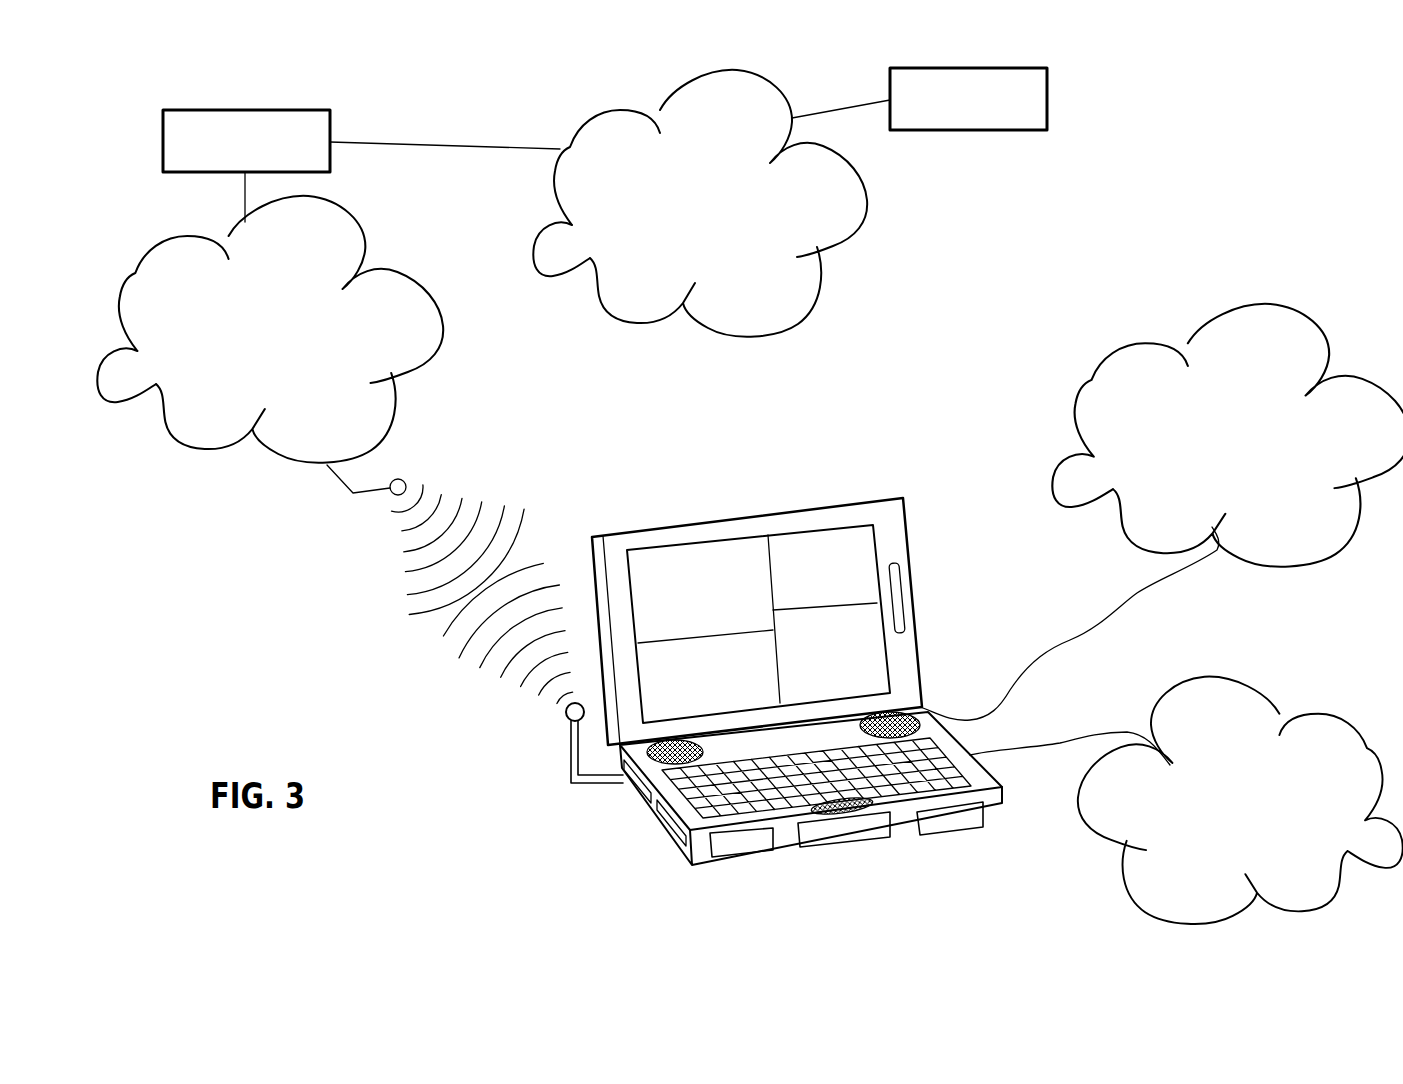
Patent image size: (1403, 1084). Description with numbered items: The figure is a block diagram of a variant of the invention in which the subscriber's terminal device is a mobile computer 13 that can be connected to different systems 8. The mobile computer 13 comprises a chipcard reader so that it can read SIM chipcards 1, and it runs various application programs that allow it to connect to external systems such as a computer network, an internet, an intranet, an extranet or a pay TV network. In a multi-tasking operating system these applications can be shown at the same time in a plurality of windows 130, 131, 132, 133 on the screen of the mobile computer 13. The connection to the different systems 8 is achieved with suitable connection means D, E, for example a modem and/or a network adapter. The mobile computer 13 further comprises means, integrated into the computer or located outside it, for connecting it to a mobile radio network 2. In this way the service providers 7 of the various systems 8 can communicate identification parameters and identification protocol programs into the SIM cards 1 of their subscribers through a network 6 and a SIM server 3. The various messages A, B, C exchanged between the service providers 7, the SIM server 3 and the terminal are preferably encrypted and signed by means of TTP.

The SIM chipcard 1 is at (731, 675).
The mobile radio network 2 is at (218, 432).
The SIM server 3 is at (283, 115).
The network 6 is at (765, 315).
The service provider 7 is at (1037, 108).
The system 8 is at (1275, 313).
The mobile computer 13 is at (718, 880).
The window 130 is at (735, 557).
The window 131 is at (858, 538).
The window 132 is at (867, 665).
The window 133 is at (657, 683).
The message A is at (435, 627).
The message B is at (245, 193).
The message C is at (450, 140).
The connection means D is at (1072, 638).
The connection means E is at (1072, 738).